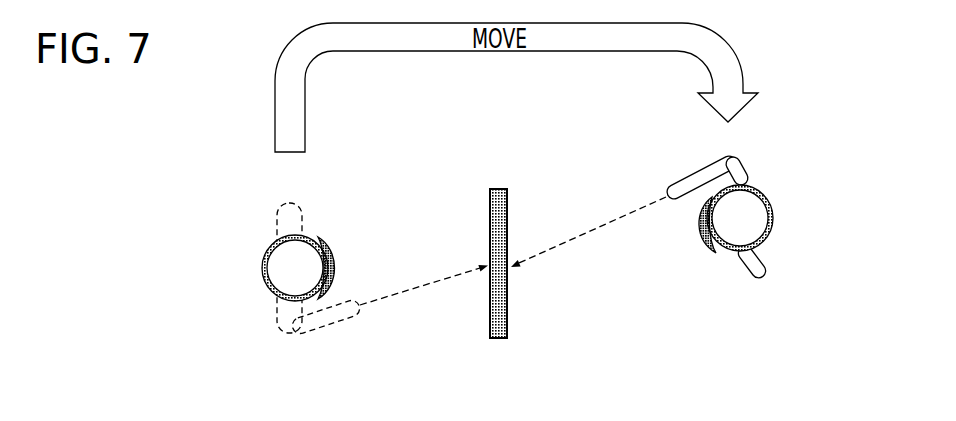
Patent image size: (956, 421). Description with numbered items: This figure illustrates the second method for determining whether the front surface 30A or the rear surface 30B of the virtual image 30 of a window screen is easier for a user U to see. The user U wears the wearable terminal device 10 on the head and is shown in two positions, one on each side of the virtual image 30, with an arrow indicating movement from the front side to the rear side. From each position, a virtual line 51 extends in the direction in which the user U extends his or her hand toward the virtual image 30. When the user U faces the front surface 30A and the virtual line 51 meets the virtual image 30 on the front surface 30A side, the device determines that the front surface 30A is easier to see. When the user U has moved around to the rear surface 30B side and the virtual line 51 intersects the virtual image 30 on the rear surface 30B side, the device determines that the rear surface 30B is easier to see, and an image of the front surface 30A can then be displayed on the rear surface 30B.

The wearable terminal device 10 is at (328, 242).
The virtual image 30 is at (497, 188).
The front surface 30A is at (490, 210).
The rear surface 30B is at (507, 210).
The virtual line 51 is at (410, 292).
The user U is at (297, 270).